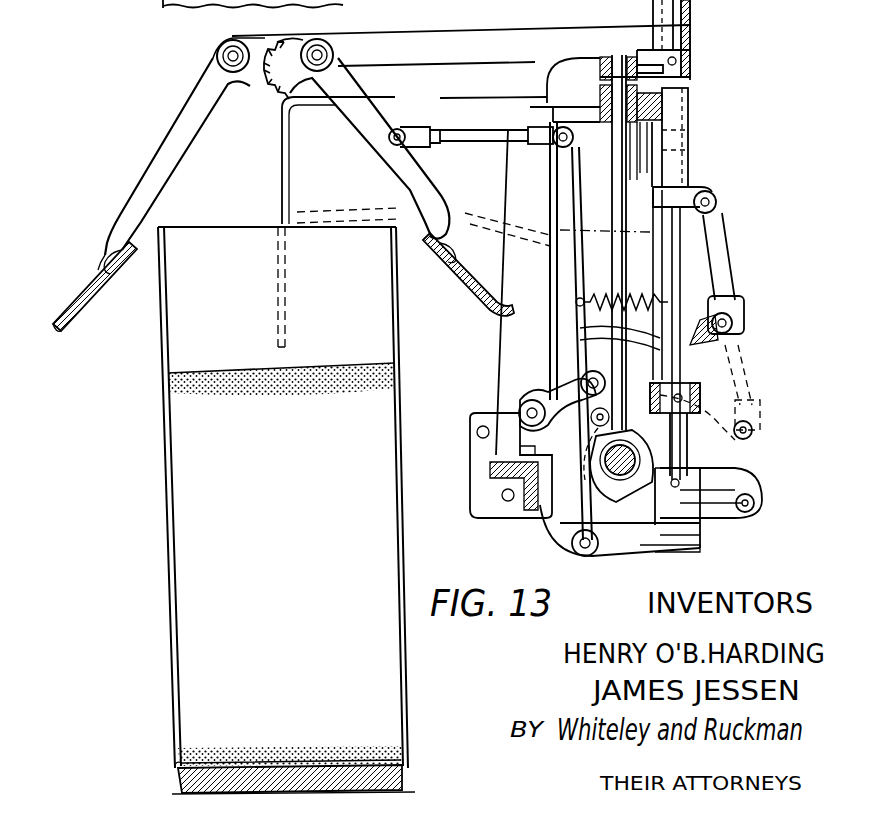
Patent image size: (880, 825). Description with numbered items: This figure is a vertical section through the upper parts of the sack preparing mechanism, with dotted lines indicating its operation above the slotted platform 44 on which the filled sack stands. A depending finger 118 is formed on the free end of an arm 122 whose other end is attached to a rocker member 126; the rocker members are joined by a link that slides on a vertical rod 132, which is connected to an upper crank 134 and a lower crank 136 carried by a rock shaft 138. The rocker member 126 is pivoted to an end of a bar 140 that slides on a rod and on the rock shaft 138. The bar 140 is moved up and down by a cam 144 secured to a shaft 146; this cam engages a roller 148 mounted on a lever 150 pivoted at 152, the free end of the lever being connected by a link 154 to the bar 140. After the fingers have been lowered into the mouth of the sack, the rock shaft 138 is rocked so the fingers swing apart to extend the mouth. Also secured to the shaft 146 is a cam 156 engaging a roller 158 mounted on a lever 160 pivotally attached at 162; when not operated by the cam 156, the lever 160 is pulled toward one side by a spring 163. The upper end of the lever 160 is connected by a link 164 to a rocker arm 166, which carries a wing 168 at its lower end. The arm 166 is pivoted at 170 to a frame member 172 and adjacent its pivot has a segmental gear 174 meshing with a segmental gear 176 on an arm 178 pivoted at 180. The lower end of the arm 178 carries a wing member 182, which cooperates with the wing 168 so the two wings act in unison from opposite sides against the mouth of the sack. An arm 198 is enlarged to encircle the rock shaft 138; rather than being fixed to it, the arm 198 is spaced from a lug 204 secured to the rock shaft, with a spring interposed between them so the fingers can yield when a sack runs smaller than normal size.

The platform 44 is at (200, 784).
The depending finger 118 is at (280, 165).
The arm 122 is at (446, 97).
The rocker member 126 is at (580, 95).
The vertical rod 132 is at (617, 187).
The upper crank 134 is at (693, 57).
The lower crank 136 is at (702, 398).
The rock shaft 138 is at (673, 264).
The bar 140 is at (690, 113).
The cam 144 is at (647, 503).
The shaft 146 is at (690, 460).
The roller 148 is at (620, 376).
The lever 150 is at (548, 380).
The pivot 152 is at (508, 402).
The link 154 is at (727, 270).
The cam 156 is at (702, 522).
The roller 158 is at (616, 488).
The lever 160 is at (571, 270).
The pivot 162 is at (572, 545).
The spring 163 is at (602, 298).
The link 164 is at (490, 137).
The rocker arm 166 is at (364, 122).
The wing 168 is at (466, 292).
The pivot 170 is at (332, 46).
The frame member 172 is at (407, 44).
The segmental gear 174 is at (287, 47).
The segmental gear 176 is at (250, 84).
The arm 178 is at (162, 143).
The pivot 180 is at (217, 56).
The wing member 182 is at (85, 300).
The arm 198 is at (756, 504).
The lug 204 is at (737, 478).